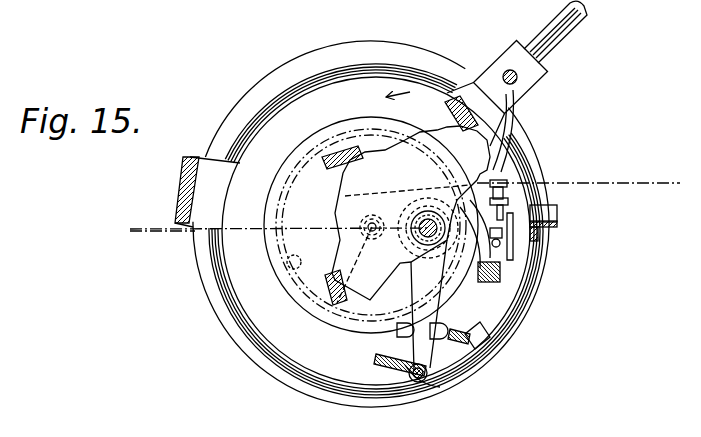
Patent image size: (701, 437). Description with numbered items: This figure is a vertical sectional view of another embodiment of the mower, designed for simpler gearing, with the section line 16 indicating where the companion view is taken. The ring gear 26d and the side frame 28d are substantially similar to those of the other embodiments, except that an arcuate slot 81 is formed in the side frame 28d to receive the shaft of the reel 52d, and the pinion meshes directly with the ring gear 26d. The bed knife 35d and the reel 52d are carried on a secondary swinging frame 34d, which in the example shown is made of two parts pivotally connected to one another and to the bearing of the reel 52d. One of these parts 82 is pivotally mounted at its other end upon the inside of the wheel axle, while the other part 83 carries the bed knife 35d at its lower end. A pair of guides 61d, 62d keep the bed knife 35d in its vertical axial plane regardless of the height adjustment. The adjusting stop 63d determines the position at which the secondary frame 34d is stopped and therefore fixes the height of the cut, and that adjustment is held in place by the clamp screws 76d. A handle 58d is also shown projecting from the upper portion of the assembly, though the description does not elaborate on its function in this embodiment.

The handle 58d is at (566, 40).
The side frame 28d is at (507, 170).
The secondary swinging frame 34d is at (532, 199).
The clamp screws 76d is at (493, 244).
The adjusting stop 63d is at (503, 260).
The guide 62d is at (480, 318).
The bed knife 35d is at (440, 387).
The guide 61d is at (395, 352).
The reel 52d is at (442, 253).
The part of secondary frame 83 is at (436, 303).
The part of secondary frame 82 is at (338, 200).
The arcuate slot 81 is at (406, 200).
The ring gear 26d is at (293, 266).
The section line 16- 16 is at (157, 231).